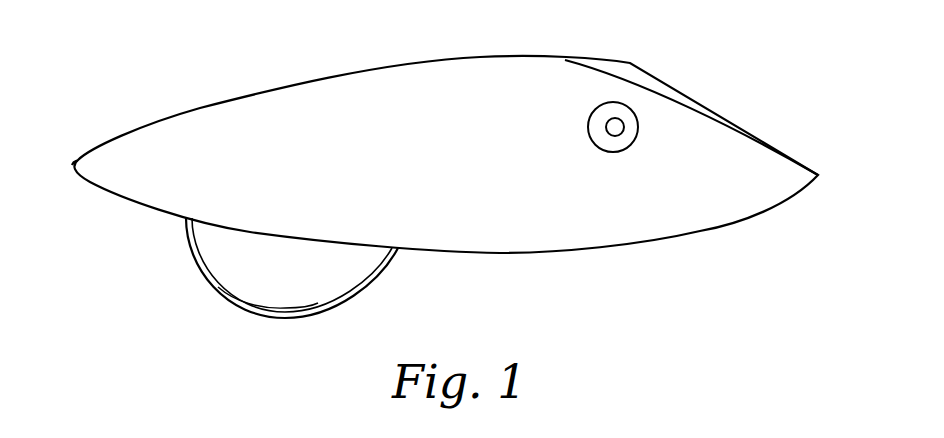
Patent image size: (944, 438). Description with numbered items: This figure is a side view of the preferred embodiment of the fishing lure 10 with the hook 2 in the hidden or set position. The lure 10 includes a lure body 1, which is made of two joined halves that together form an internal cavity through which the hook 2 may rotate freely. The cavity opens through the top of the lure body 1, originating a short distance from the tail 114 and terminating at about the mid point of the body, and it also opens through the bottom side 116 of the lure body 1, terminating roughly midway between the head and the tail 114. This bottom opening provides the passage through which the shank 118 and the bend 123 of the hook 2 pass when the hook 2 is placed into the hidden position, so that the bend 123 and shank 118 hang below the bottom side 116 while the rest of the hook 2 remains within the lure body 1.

The lure body 1 is at (470, 165).
The fishing lure 10 is at (218, 84).
The tail 114 is at (76, 166).
The hook 2 is at (193, 261).
The bend 123 is at (255, 314).
The bottom side 116 is at (317, 242).
The shank 118 is at (369, 281).